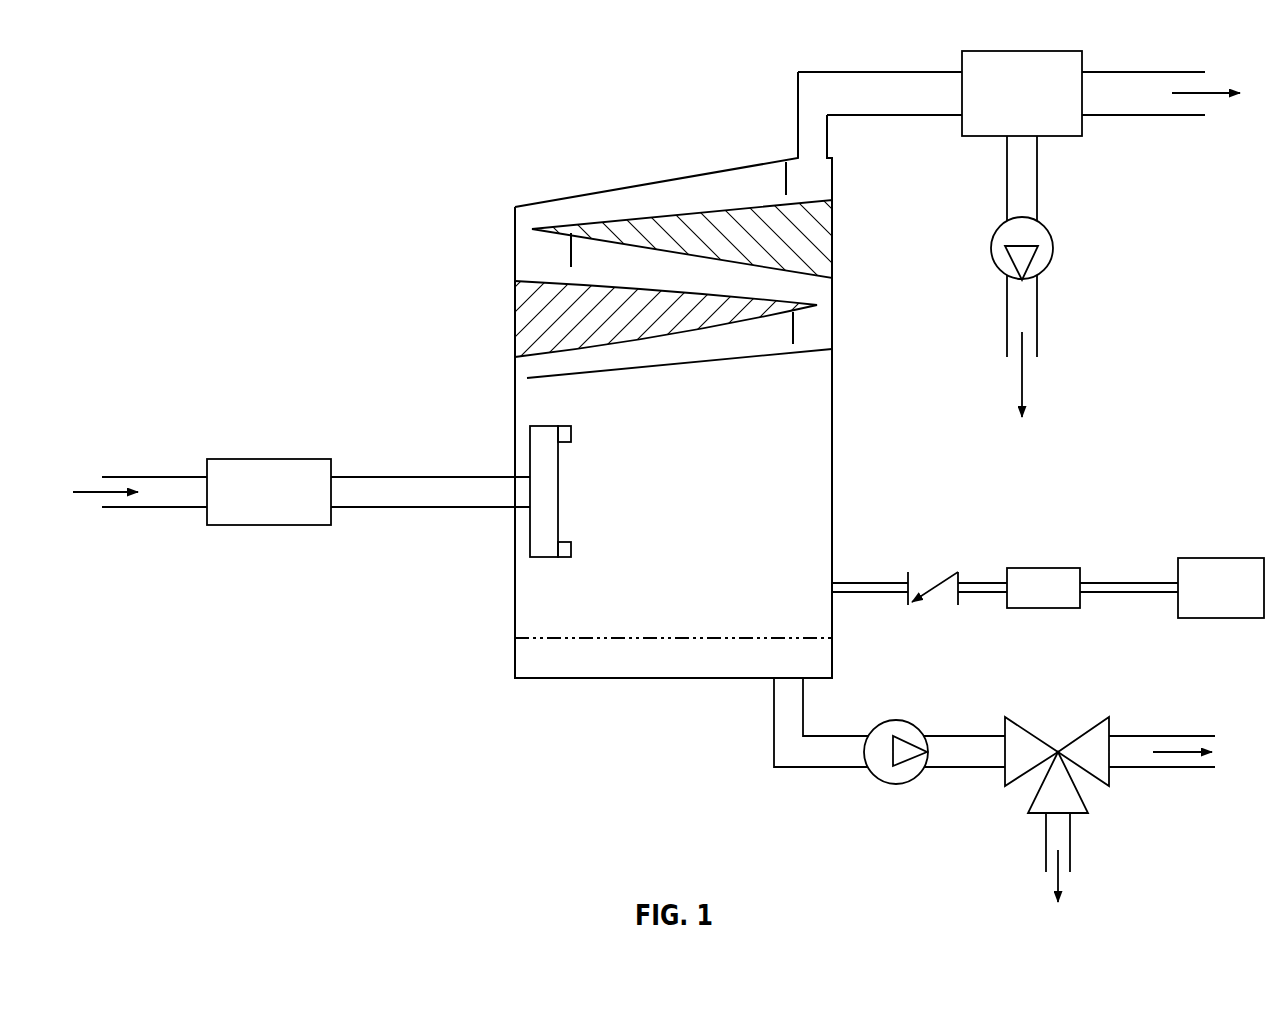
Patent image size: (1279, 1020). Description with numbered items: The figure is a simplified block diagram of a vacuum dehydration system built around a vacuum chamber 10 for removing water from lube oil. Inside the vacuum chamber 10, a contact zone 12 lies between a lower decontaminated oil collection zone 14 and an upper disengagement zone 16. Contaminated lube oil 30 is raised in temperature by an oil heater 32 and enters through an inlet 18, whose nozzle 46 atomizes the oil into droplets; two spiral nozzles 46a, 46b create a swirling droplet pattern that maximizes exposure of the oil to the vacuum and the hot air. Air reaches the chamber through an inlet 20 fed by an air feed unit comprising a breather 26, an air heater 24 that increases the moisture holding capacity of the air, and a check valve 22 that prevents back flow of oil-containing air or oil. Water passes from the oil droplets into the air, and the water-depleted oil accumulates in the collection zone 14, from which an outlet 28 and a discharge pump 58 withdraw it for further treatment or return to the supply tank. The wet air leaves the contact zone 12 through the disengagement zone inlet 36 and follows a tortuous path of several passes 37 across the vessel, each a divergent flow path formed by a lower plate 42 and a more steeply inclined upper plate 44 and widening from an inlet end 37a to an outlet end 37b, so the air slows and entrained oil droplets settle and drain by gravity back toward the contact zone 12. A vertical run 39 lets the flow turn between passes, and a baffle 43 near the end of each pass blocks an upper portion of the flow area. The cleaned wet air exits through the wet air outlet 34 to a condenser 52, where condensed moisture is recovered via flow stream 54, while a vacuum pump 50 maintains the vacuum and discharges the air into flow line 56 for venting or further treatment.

The vacuum chamber 10 is at (536, 90).
The contact zone 12 is at (703, 502).
The decontaminated oil collection zone 14 is at (688, 674).
The disengagement zone 16 is at (659, 294).
The inlet 18 is at (512, 470).
The inlet 20 is at (838, 577).
The check valve 22 is at (938, 608).
The air heater 24 is at (1058, 603).
The breather 26 is at (1235, 603).
The outlet 28 is at (770, 682).
The contaminated lube oil 30 is at (87, 490).
The oil heater 32 is at (283, 507).
The wet air outlet 34 is at (793, 148).
The disengagement zone inlet 36 is at (495, 378).
The passes 37 is at (726, 203).
The inlet end 37a is at (765, 294).
The outlet end 37b is at (562, 279).
The vertical run 39 is at (830, 308).
The lower plate 42 is at (748, 358).
The baffle 43 is at (565, 250).
The upper plate 44 is at (597, 345).
The nozzle 46 is at (591, 494).
The spiral nozzle 46a is at (571, 433).
The spiral nozzle 46b is at (571, 549).
The vacuum pump 50 is at (1053, 250).
The condenser 52 is at (1021, 51).
The flow stream 54 is at (1212, 97).
The flow line 56 is at (1024, 372).
The discharge pump 58 is at (896, 784).